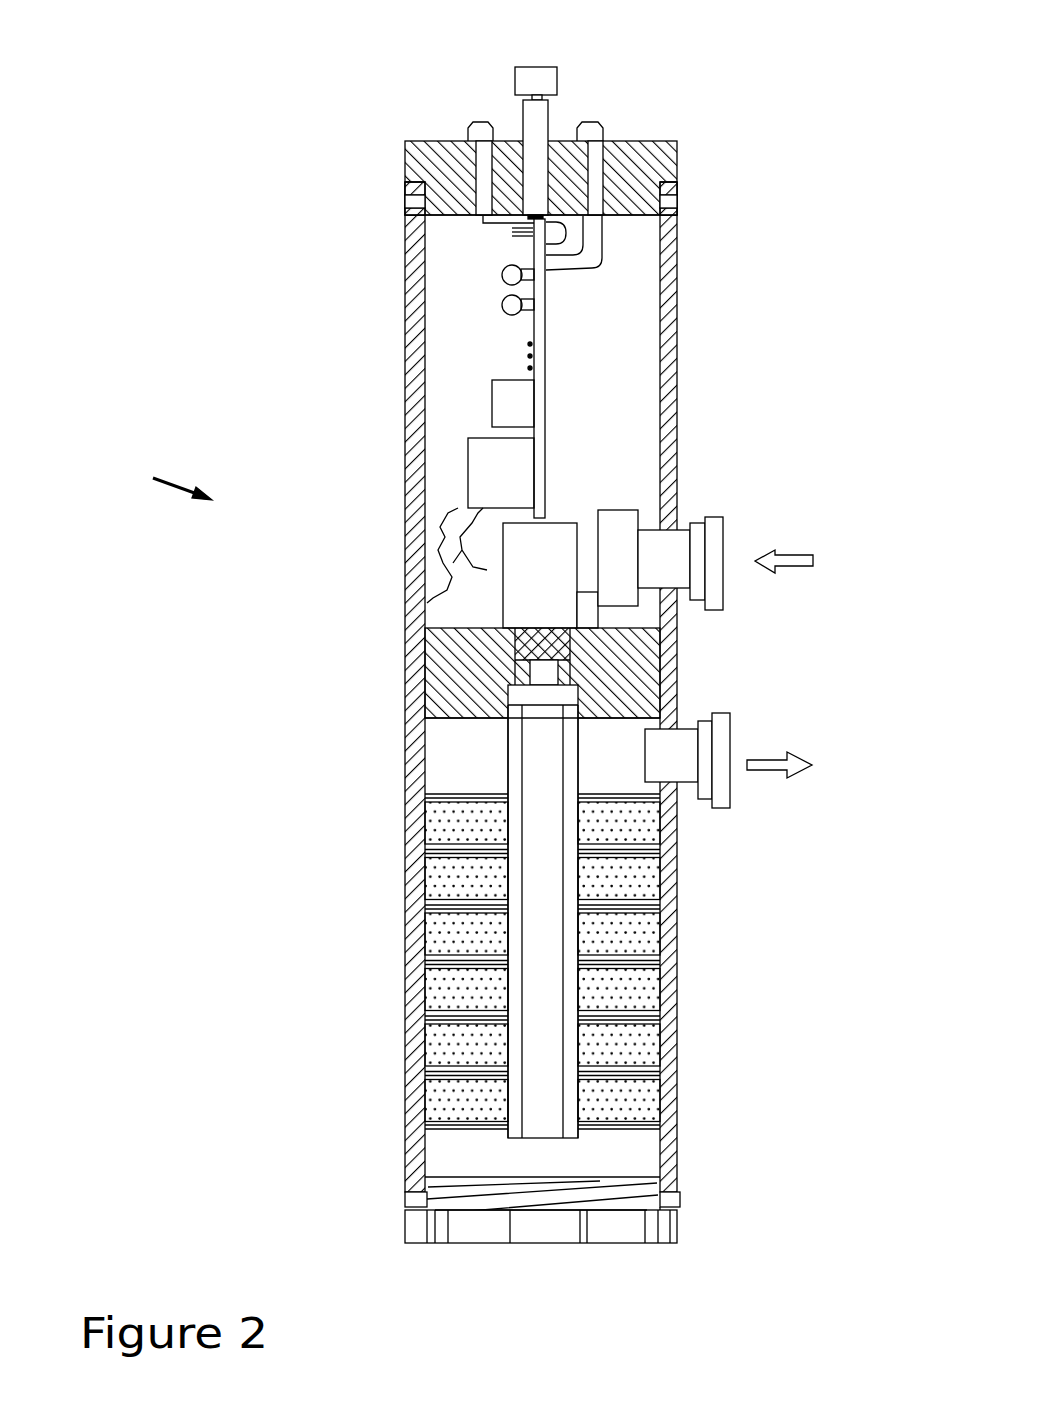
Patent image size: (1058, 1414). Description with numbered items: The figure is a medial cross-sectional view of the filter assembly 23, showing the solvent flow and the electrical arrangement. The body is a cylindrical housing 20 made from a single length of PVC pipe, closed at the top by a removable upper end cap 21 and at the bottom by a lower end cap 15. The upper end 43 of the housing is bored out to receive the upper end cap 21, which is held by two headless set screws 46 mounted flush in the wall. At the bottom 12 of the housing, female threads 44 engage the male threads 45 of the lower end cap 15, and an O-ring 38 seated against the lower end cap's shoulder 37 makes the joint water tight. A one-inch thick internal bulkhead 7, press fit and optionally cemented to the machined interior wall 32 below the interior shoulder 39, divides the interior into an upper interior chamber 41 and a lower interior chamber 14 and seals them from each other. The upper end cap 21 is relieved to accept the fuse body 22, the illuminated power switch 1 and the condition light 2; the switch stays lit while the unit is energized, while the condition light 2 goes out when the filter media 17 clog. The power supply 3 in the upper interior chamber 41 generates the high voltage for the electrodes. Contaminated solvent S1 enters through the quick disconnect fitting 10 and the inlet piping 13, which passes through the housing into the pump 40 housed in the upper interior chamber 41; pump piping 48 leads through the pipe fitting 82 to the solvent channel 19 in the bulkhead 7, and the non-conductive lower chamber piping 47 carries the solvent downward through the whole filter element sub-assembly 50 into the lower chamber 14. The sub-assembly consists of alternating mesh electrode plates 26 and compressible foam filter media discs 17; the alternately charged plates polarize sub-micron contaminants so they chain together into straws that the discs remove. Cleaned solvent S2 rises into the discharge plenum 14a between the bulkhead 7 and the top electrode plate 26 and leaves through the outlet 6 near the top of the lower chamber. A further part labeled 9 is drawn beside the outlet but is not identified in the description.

The illuminated power switch 1 is at (551, 67).
The condition light 2 is at (598, 123).
The power supply 3 is at (465, 448).
The outlet 6 is at (692, 785).
The internal bulkhead 7 is at (630, 673).
The outlet flange 9 is at (727, 810).
The quick disconnect fitting 10 is at (727, 528).
The bottom of the housing 12 is at (408, 1183).
The inlet piping 13 is at (673, 547).
The lower interior chamber 14 is at (638, 1158).
The discharge plenum 14a is at (623, 755).
The lower end cap 15 is at (413, 1228).
The filter media disc 17 is at (443, 987).
The solvent channel 19 is at (525, 662).
The cylindrical housing 20 is at (405, 282).
The upper end cap 21 is at (422, 140).
The fuse body 22 is at (480, 122).
The filter assembly 23 is at (161, 469).
The electrode plate 26 is at (475, 785).
The machined interior wall 32 is at (660, 972).
The lower end cap's shoulder 37 is at (680, 1205).
The O-ring 38 is at (680, 1193).
The interior shoulder 39 is at (423, 643).
The pump 40 is at (618, 530).
The upper interior chamber 41 is at (613, 358).
The upper end of the cylindrical housing 43 is at (678, 215).
The female threads 44 is at (405, 1202).
The male threads 45 is at (573, 1188).
The set screws 46 is at (405, 203).
The lower chamber piping 47 is at (507, 872).
The pump piping 48 is at (567, 540).
The filter element sub-assembly 50 is at (643, 1045).
The pipe fitting 82 is at (523, 648).
The contaminated solvent S1 is at (793, 567).
The cleaned solvent S2 is at (770, 772).